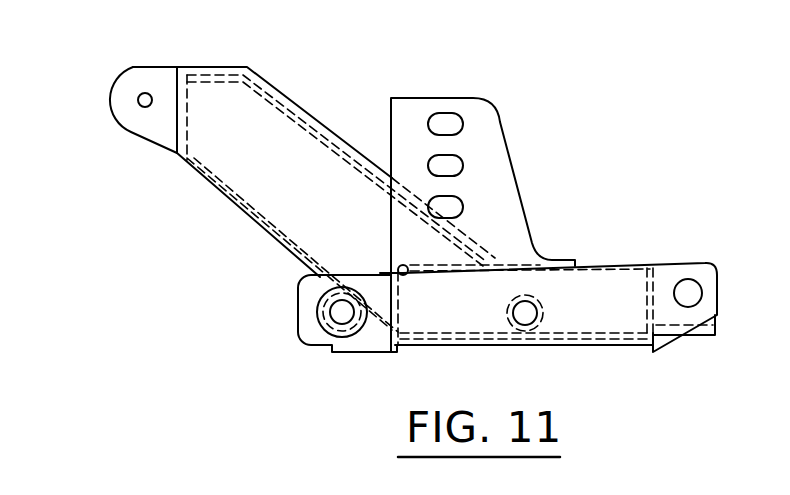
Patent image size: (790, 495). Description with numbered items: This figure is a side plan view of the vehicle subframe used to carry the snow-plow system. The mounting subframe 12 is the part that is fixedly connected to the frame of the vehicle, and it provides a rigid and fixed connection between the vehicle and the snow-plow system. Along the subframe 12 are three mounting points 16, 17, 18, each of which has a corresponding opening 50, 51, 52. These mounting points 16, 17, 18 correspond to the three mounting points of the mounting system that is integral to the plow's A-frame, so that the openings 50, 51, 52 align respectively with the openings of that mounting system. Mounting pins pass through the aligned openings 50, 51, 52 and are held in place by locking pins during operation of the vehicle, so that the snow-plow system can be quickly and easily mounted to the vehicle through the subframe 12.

The mounting subframe 12 is at (509, 150).
The mounting point 16 is at (281, 319).
The mounting point 17 is at (297, 330).
The mounting point 18 is at (145, 93).
The opening 50 is at (307, 349).
The opening 51 is at (345, 318).
The opening 52 is at (130, 132).